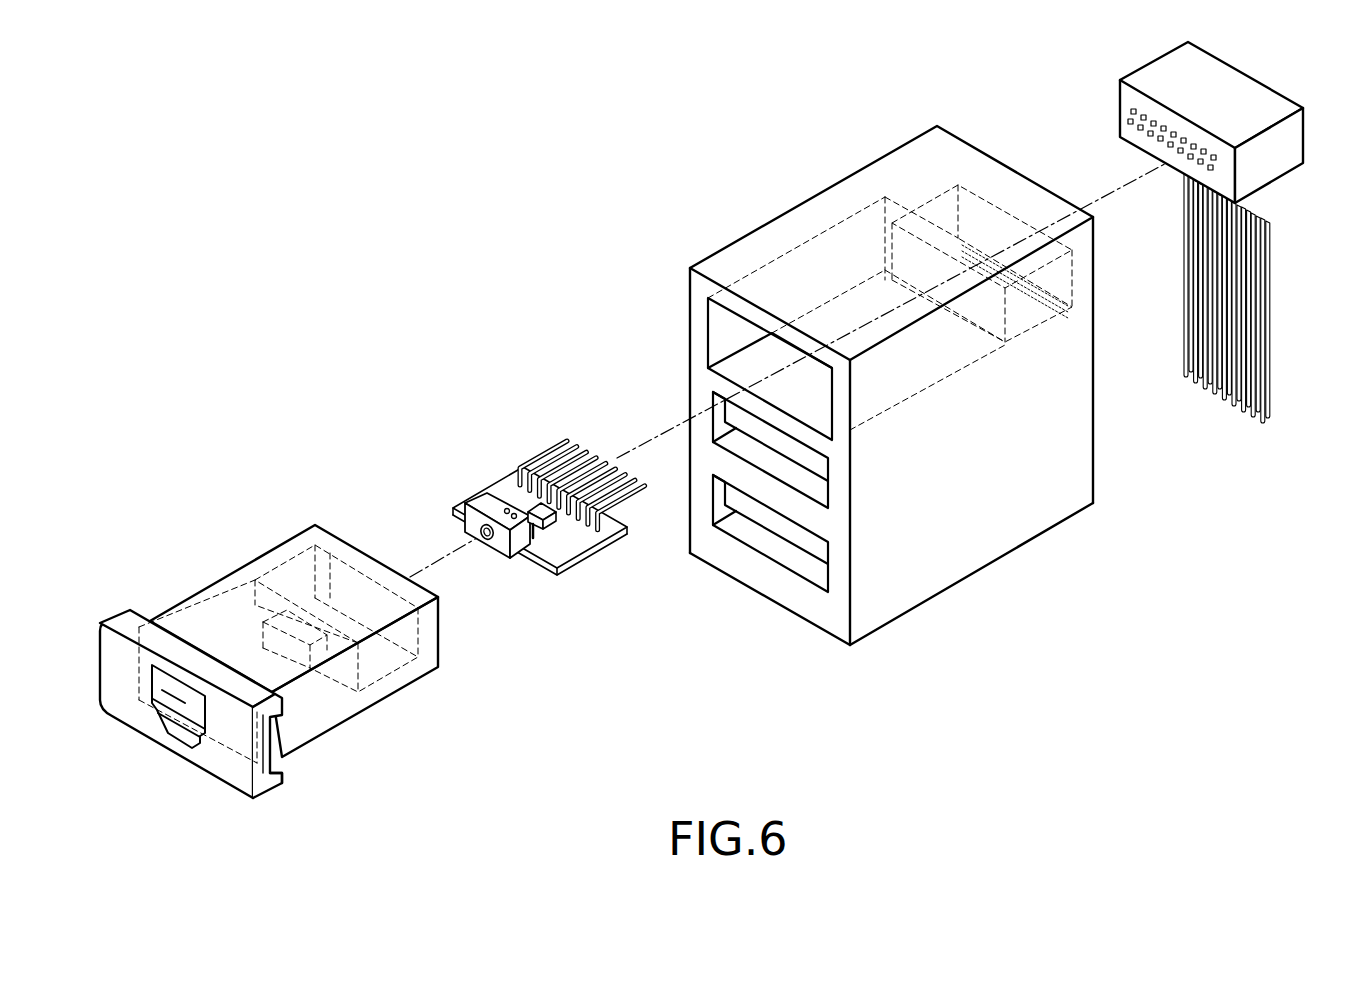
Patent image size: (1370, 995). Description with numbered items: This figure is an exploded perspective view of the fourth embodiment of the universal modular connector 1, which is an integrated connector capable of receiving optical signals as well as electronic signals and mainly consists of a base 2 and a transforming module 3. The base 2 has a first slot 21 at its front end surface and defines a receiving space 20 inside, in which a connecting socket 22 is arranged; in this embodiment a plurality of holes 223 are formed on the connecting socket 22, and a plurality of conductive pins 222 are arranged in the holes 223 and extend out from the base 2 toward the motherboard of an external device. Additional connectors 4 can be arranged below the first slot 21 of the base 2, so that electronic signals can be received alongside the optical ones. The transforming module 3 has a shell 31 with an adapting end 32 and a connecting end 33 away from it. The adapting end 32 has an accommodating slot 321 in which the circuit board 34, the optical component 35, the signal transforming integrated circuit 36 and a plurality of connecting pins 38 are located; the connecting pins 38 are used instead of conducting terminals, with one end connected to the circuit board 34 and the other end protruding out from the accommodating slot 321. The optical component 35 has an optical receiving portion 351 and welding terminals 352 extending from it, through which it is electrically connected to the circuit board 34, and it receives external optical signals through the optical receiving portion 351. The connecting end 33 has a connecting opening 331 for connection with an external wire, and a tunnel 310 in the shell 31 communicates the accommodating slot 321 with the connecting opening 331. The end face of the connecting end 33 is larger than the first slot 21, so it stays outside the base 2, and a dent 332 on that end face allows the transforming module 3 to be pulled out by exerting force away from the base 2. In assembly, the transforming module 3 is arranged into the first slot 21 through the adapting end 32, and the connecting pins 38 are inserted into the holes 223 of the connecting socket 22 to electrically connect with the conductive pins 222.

The universal modular connector 1 is at (464, 166).
The base 2 is at (828, 154).
The receiving space 20 is at (985, 225).
The first slot 21 is at (723, 323).
The connecting socket 22 is at (1247, 95).
The conductive pins 222 is at (1203, 318).
The holes 223 is at (1187, 153).
The transforming module 3 is at (357, 403).
The shell 31 is at (342, 708).
The adapting end 32 is at (445, 627).
The tunnel 310 is at (310, 620).
The accommodating slot 321 is at (348, 590).
The connecting end 33 is at (228, 765).
The connecting opening 331 is at (183, 733).
The dent 332 is at (270, 778).
The circuit board 34 is at (542, 564).
The optical component 35 is at (480, 495).
The optical receiving portion 351 is at (480, 535).
The welding terminals 352 is at (547, 527).
The signal transforming integrated circuit 36 is at (538, 533).
The connecting pins 38 is at (547, 448).
The connectors 4 is at (783, 523).